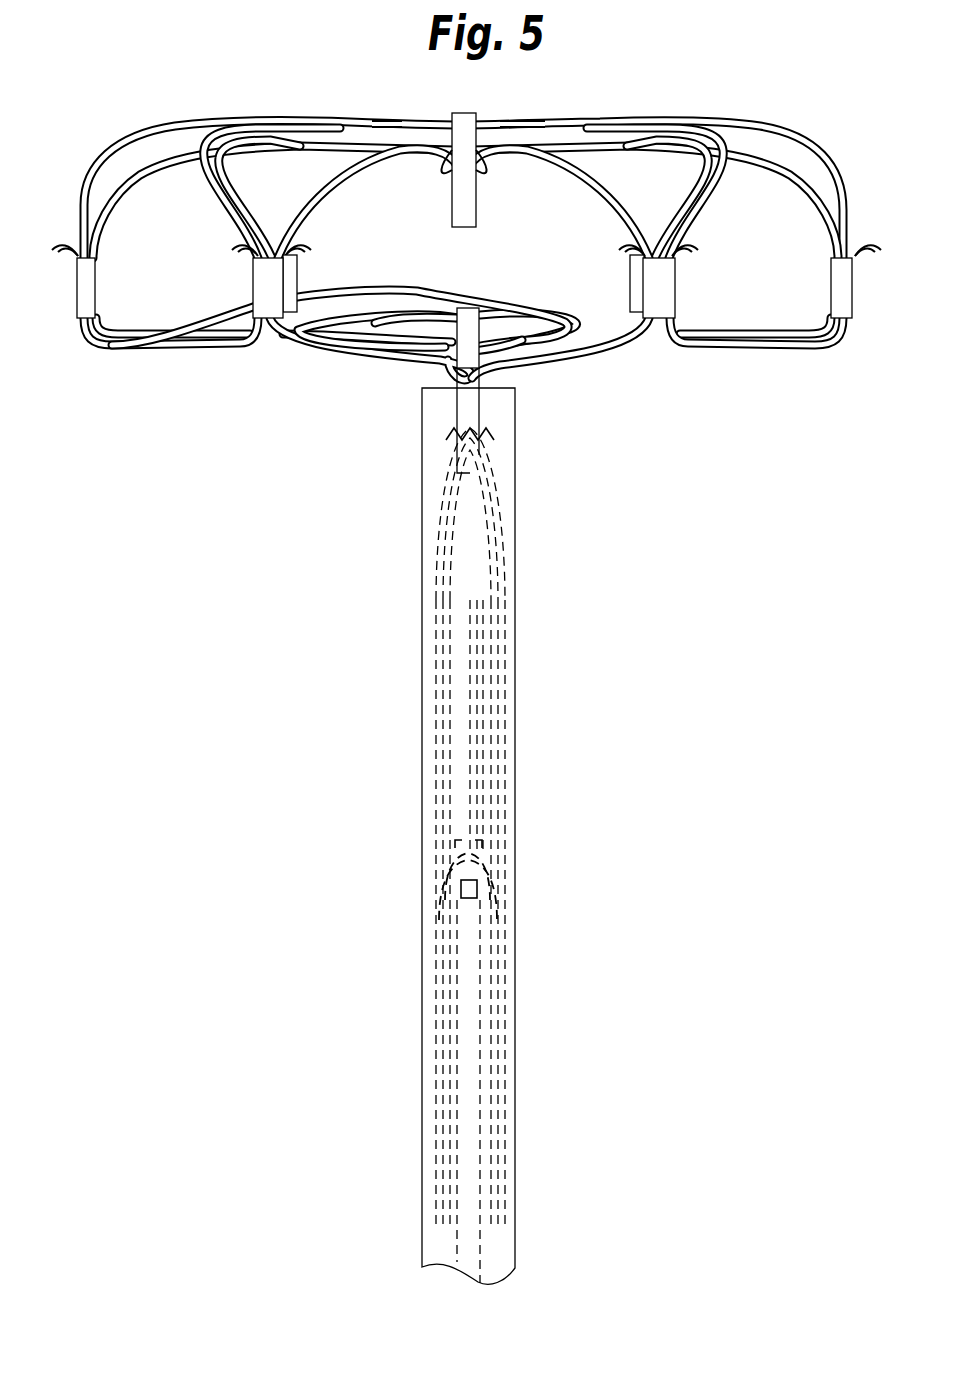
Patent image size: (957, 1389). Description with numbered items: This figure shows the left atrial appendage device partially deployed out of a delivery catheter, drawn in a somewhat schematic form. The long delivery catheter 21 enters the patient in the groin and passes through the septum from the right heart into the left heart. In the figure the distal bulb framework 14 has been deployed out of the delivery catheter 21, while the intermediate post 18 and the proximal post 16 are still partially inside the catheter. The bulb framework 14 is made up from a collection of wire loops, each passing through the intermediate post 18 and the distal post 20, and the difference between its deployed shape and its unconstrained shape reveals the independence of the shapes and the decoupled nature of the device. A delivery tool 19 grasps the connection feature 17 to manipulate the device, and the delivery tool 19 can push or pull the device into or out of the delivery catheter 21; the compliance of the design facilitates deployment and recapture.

The bulb framework 14 is at (788, 104).
The proximal post 16 is at (480, 846).
The connection feature 17 is at (478, 876).
The intermediate post 18 is at (484, 375).
The delivery tool 19 is at (485, 948).
The distal post 20 is at (468, 113).
The delivery catheter 21 is at (518, 476).